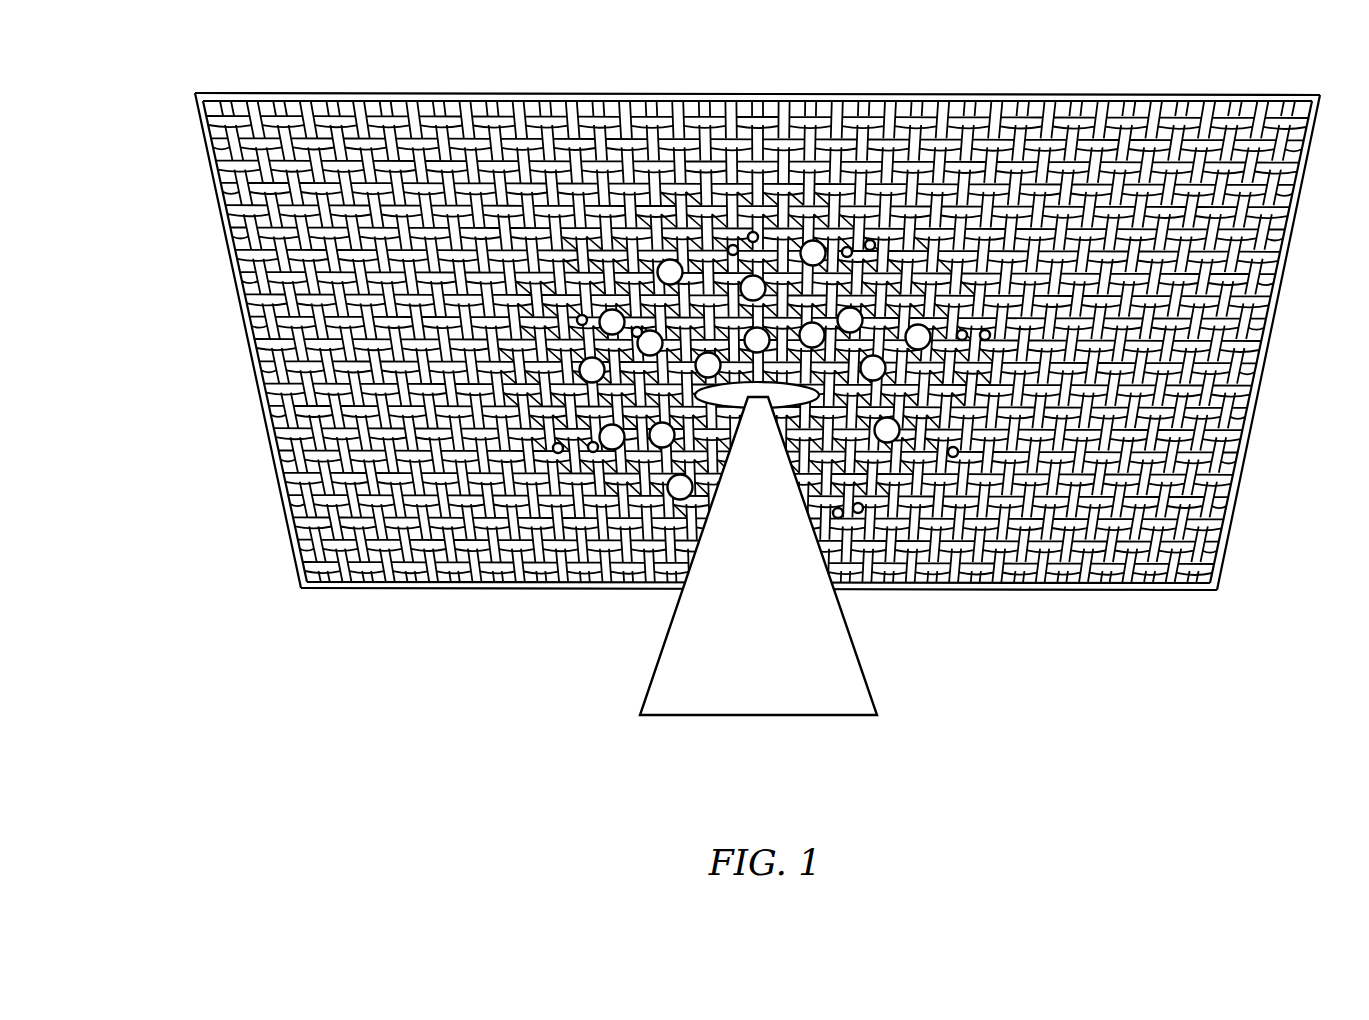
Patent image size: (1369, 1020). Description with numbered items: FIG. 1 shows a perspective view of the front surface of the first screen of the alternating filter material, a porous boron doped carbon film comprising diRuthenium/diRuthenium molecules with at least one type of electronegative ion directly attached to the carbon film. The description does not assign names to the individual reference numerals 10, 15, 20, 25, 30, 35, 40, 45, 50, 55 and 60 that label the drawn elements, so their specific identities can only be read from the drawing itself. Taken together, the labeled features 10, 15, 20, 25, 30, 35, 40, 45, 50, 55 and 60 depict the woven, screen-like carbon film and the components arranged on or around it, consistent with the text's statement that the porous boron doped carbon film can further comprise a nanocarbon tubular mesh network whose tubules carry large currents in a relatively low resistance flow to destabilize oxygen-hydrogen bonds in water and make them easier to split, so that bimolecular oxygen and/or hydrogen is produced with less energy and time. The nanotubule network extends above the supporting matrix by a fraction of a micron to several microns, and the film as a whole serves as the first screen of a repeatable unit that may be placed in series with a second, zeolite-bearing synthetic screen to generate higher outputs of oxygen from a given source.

The screen assembly 10 is at (703, 359).
The mesh fibers 15 is at (513, 538).
The mesh 20 is at (610, 490).
The particles 25 is at (812, 240).
The spray nozzle 30 is at (777, 688).
The spray outlet 35 is at (740, 400).
The deposition region 40 is at (893, 385).
The screen panel 45 is at (756, 359).
The left frame edge 50 is at (253, 375).
The top frame edge 55 is at (1040, 95).
The bottom frame edge 60 is at (1122, 592).